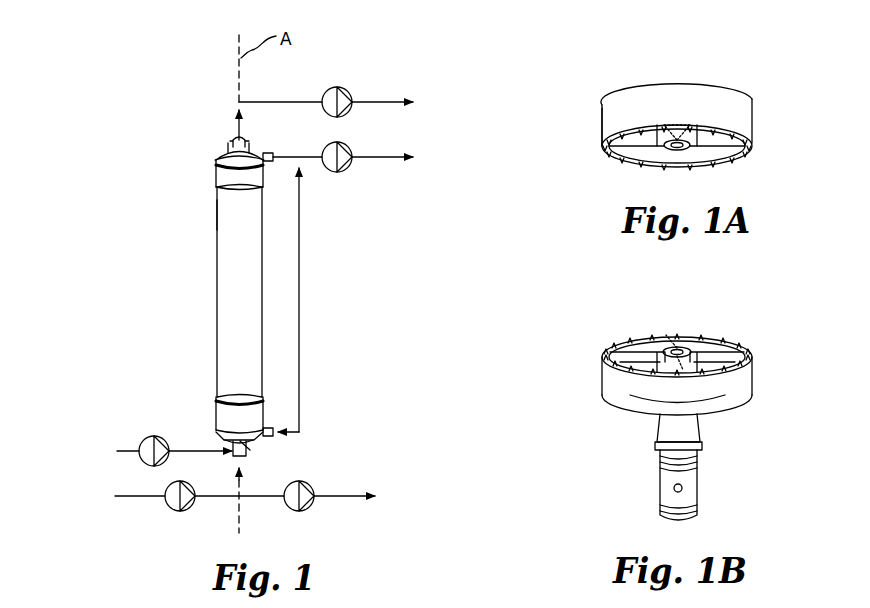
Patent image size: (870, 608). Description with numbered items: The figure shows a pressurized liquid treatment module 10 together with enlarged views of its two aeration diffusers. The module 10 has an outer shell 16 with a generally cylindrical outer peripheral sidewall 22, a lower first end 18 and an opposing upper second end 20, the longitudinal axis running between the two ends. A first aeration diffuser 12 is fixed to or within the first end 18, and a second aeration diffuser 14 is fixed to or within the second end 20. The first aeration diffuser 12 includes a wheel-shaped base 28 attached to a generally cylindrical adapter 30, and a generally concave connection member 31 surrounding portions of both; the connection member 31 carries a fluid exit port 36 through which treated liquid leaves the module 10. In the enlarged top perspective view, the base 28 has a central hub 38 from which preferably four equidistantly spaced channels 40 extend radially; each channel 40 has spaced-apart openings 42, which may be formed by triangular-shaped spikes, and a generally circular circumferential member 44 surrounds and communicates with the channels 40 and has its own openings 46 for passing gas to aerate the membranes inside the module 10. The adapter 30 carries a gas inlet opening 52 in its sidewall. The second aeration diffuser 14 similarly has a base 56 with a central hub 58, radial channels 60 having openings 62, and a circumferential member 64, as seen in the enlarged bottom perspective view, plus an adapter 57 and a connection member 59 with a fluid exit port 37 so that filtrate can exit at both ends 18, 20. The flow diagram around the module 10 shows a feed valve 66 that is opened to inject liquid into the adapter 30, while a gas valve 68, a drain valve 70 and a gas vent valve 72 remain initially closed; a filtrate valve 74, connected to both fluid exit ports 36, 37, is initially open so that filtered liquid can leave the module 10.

In FIG. 1, the pressurized liquid treatment module 10 is at (128, 128).
In FIG. 1, the first aeration diffuser 12 is at (218, 427).
In FIG. 1B, the first aeration diffuser 12 is at (548, 358).
In FIG. 1, the second aeration diffuser 14 is at (220, 151).
In FIG. 1A, the second aeration diffuser 14 is at (768, 76).
In FIG. 1, the outer shell 16 is at (217, 297).
In FIG. 1, the first end 18 is at (217, 400).
In FIG. 1, the second end 20 is at (218, 179).
In FIG. 1, the outer peripheral sidewall 22 is at (217, 214).
In FIG. 1B, the base 28 is at (752, 378).
In FIG. 1, the adapter 30 is at (234, 457).
In FIG. 1B, the adapter 30 is at (700, 480).
In FIG. 1, the connection member 31 is at (252, 452).
In FIG. 1, the fluid exit port 36 is at (266, 453).
In FIG. 1, the fluid exit port 37 is at (270, 152).
In FIG. 1B, the central hub 38 is at (653, 348).
In FIG. 1B, the channels 40 is at (612, 351).
In FIG. 1B, the openings 42 is at (672, 345).
In FIG. 1B, the circumferential member 44 is at (650, 411).
In FIG. 1B, the openings 46 is at (692, 342).
In FIG. 1B, the gas inlet opening 52 is at (673, 489).
In FIG. 1, the base 56 is at (217, 158).
In FIG. 1, the adapter 57 is at (246, 140).
In FIG. 1A, the central hub 58 is at (683, 136).
In FIG. 1, the connection member 59 is at (232, 140).
In FIG. 1A, the channels 60 is at (727, 129).
In FIG. 1A, the openings 62 is at (723, 150).
In FIG. 1A, the circumferential member 64 is at (633, 106).
In FIG. 1, the feed valve 66 is at (170, 507).
In FIG. 1, the gas valve 68 is at (142, 440).
In FIG. 1, the drain valve 70 is at (312, 507).
In FIG. 1, the gas vent valve 72 is at (346, 92).
In FIG. 1, the filtrate valve 74 is at (346, 167).